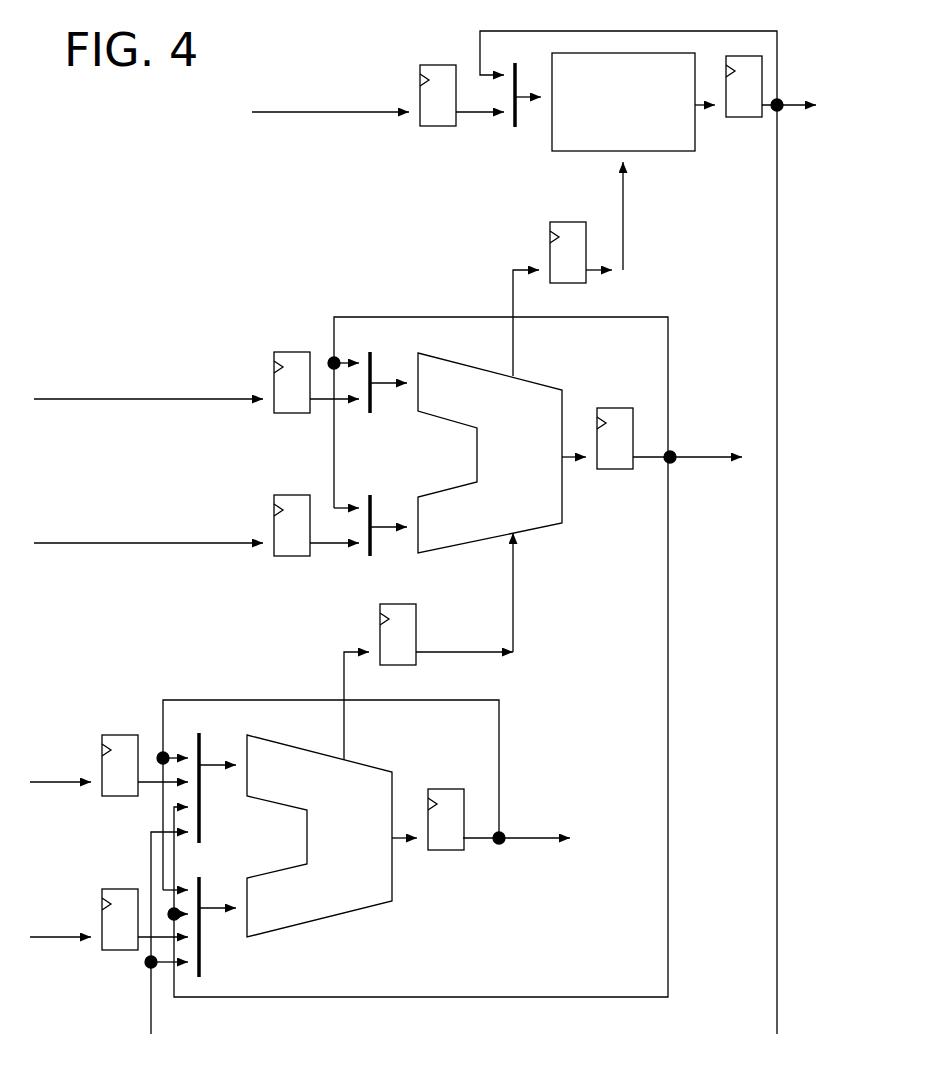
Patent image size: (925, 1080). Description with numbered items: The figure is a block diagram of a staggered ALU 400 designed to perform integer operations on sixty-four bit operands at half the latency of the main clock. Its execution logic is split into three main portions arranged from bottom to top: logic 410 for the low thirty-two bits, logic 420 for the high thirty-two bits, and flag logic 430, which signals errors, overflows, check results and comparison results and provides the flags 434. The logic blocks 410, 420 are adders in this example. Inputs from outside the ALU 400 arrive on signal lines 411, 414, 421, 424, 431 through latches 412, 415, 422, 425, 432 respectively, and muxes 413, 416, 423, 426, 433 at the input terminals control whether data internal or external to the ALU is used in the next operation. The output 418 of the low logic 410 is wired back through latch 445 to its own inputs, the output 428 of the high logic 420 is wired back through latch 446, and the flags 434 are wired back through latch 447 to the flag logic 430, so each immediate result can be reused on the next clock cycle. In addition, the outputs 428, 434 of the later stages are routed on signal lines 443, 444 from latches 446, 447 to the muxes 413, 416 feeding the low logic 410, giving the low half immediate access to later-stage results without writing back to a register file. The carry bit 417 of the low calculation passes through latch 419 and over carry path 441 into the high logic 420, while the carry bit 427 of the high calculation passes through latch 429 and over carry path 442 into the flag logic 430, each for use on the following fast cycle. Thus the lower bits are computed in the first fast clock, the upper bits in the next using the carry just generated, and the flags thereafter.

The staggered ALU 400 is at (434, 532).
The low 32 bit logic 410 is at (332, 836).
The signal line 411 is at (43, 782).
The latch 412 is at (145, 765).
The mux 413 is at (201, 818).
The signal line 414 is at (43, 937).
The latch 415 is at (145, 919).
The mux 416 is at (201, 952).
The carry bit 417 is at (346, 722).
The output of low 32 bit logic 418 is at (522, 840).
The latch 419 is at (446, 634).
The high 32 bit logic 420 is at (502, 453).
The signal line 421 is at (45, 400).
The latch 422 is at (316, 382).
The mux 423 is at (372, 416).
The signal line 424 is at (45, 544).
The latch 425 is at (316, 525).
The mux 426 is at (372, 558).
The carry bit 427 is at (515, 342).
The output of high 32 bit logic 428 is at (693, 458).
The latch 429 is at (581, 252).
The flag logic 430 is at (633, 102).
The signal line 431 is at (264, 113).
The latch 432 is at (462, 95).
The mux 433 is at (511, 129).
The flags 434 is at (780, 126).
The carry bit path 441 is at (513, 580).
The carry bit path 442 is at (623, 197).
The signal line 443 is at (668, 773).
The signal line 444 is at (776, 727).
The latch 445 is at (446, 819).
The latch 446 is at (615, 438).
The latch 447 is at (744, 86).